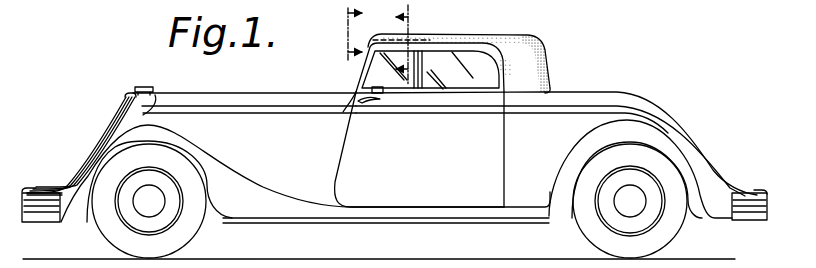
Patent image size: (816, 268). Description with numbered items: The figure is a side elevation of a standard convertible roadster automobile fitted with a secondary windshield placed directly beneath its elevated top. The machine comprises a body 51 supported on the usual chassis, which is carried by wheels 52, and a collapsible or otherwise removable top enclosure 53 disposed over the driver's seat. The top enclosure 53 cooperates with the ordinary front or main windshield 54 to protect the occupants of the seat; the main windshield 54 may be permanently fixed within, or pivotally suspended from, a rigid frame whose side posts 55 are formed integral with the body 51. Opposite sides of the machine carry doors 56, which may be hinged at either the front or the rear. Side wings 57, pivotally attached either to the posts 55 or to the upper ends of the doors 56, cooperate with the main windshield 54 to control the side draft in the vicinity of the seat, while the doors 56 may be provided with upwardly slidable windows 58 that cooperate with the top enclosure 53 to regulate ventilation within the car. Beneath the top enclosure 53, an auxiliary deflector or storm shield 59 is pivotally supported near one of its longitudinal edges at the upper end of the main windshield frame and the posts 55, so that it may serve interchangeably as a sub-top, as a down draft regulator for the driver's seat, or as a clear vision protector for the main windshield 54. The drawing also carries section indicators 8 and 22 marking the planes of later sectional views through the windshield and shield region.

The section line 8- 8 is at (343, 33).
The section line 22- 22 is at (423, 45).
The body 51 is at (233, 118).
The wheels 52 is at (181, 242).
The top enclosure 53 is at (523, 62).
The main windshield 54 is at (360, 69).
The side posts 55 is at (352, 95).
The doors 56 is at (419, 149).
The side wings 57 is at (394, 80).
The windows 58 is at (461, 86).
The storm shield 59 is at (435, 38).